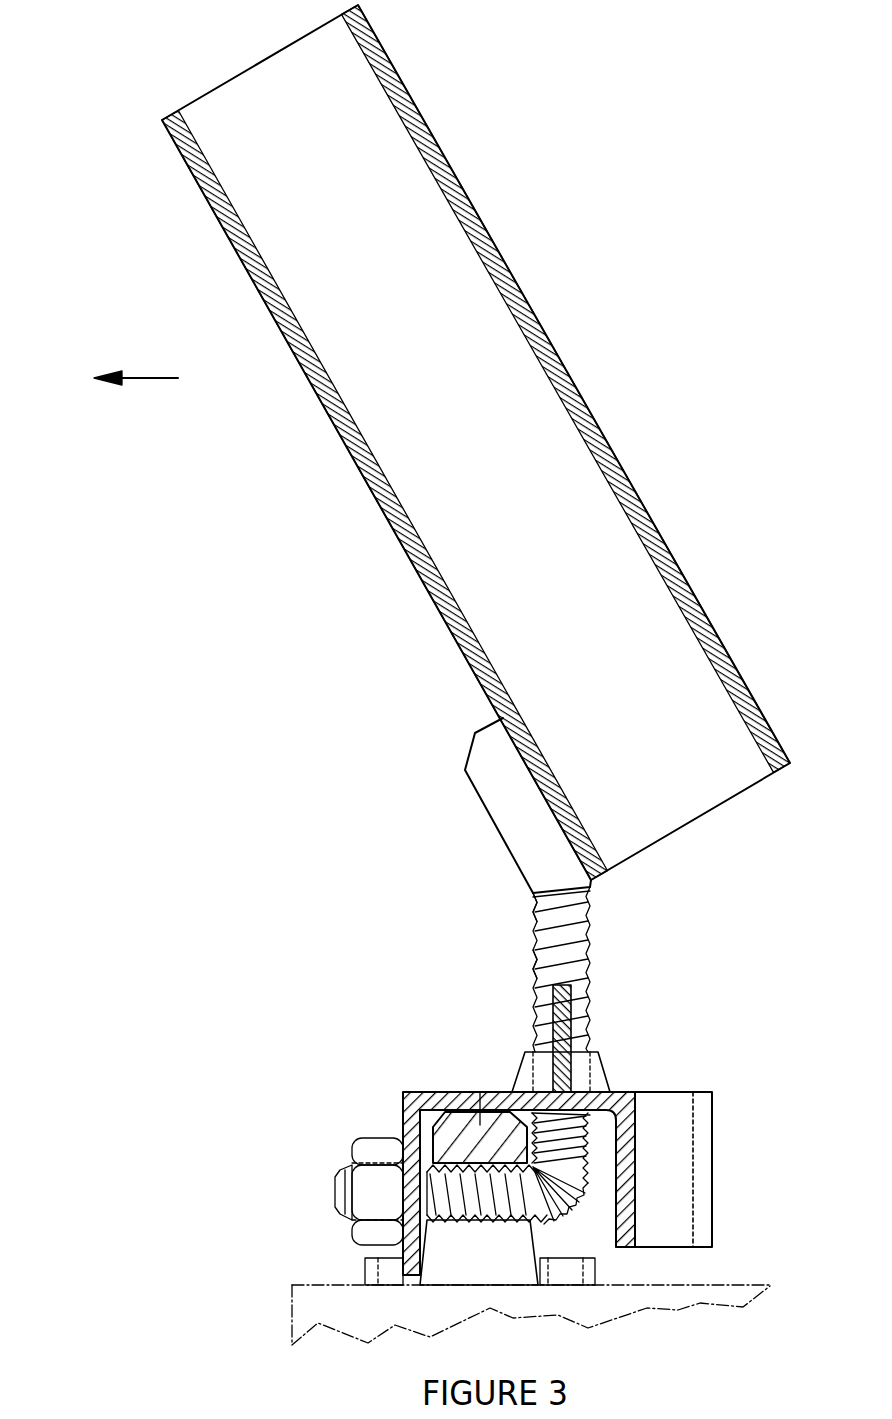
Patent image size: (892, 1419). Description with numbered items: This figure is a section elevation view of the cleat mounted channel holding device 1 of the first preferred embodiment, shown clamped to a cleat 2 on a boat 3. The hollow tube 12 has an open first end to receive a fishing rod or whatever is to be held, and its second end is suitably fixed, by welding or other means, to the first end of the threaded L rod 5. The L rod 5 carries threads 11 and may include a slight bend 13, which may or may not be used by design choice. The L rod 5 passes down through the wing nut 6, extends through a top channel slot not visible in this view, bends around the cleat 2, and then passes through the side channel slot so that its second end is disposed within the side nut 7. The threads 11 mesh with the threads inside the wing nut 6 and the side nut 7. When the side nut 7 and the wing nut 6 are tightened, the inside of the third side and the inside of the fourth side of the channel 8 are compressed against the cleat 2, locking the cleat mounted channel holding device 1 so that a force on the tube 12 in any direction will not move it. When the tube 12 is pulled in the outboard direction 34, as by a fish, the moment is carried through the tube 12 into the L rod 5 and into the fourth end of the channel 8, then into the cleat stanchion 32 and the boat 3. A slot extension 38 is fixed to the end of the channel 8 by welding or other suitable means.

The cleat mounted channel holding device 1 is at (465, 766).
The cleat 2 is at (480, 1092).
The boat 3 is at (320, 1283).
The threaded L rod 5 is at (590, 918).
The wing nut 6 is at (598, 1060).
The side nut 7 is at (371, 1138).
The channel 8 is at (628, 1092).
The threads 11 is at (535, 972).
The tube 12 is at (366, 480).
The slight bend 13 is at (535, 906).
The cleat stanchion 32 is at (543, 1233).
The outboard direction 34 is at (160, 380).
The slot extension 38 is at (714, 1140).